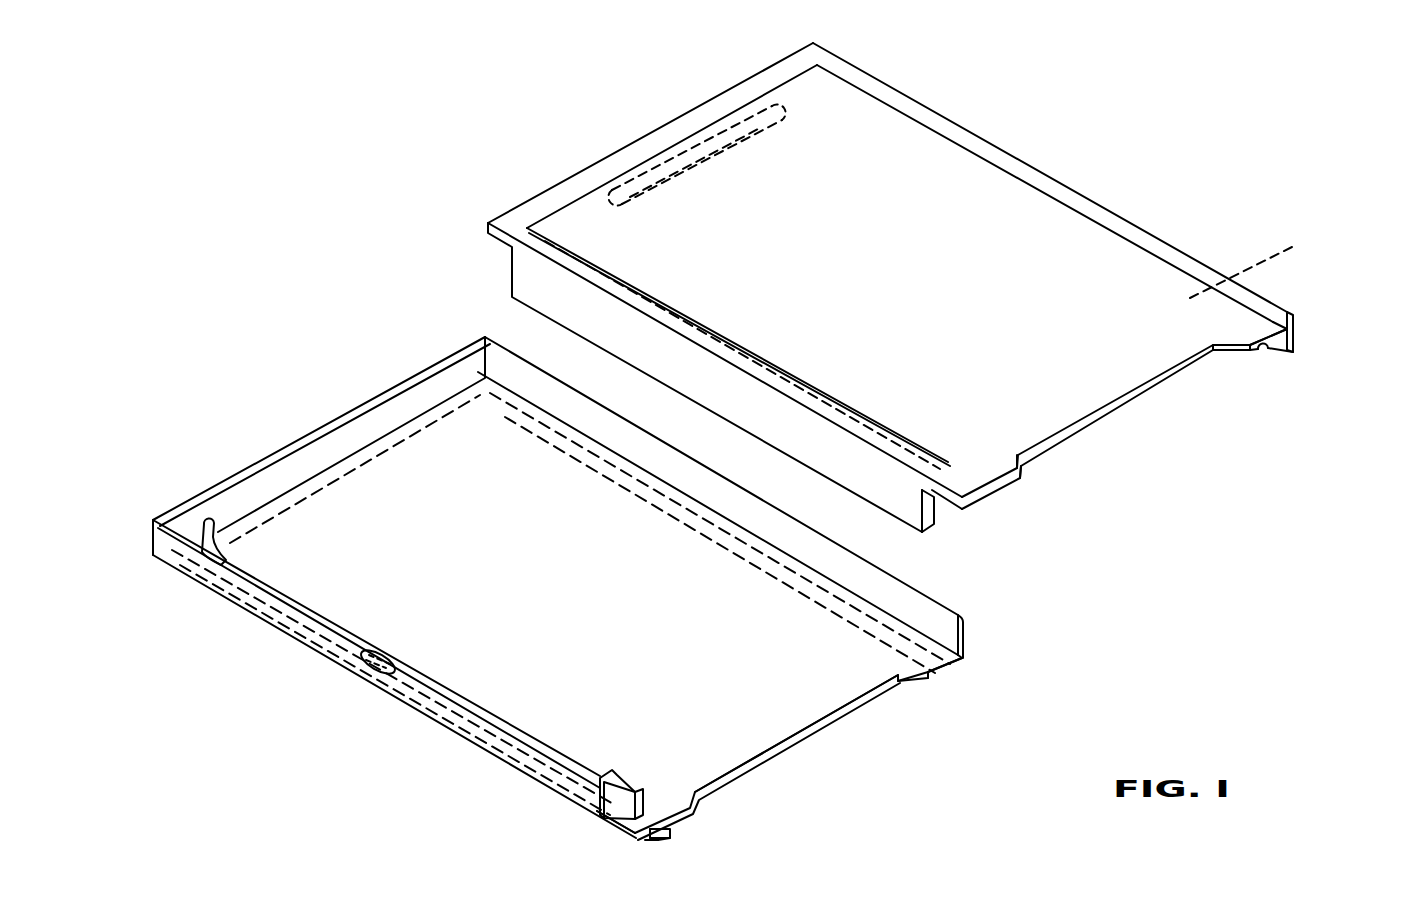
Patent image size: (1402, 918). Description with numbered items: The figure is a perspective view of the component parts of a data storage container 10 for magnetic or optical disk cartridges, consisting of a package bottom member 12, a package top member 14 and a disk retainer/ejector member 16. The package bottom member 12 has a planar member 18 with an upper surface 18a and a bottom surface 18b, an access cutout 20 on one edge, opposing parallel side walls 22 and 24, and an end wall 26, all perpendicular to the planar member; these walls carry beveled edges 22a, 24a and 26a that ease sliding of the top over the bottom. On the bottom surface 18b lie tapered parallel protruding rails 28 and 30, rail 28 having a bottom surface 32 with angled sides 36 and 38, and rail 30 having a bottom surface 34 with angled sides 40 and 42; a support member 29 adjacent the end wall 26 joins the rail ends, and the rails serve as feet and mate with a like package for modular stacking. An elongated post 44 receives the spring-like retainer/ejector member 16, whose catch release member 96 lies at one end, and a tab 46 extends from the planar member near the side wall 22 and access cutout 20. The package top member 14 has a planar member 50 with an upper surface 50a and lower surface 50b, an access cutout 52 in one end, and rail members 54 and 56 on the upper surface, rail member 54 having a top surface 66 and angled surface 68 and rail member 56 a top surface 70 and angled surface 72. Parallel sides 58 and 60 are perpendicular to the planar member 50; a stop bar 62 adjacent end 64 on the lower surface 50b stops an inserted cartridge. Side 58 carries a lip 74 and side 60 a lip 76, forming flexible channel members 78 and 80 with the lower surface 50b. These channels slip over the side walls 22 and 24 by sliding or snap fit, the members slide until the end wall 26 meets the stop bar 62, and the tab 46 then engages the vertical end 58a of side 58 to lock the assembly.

The data storage container 10 is at (1268, 142).
The package bottom member 12 is at (1045, 655).
The package top member 14 is at (1212, 396).
The disk retainer/ejector member 16 is at (240, 534).
The planar member 18 is at (626, 599).
The upper surface of planar member 18a is at (770, 659).
The bottom surface of planar member 18b is at (748, 747).
The access cutout 20 is at (812, 736).
The side wall 22 is at (173, 552).
The beveled edge 22a is at (560, 747).
The side wall 24 is at (645, 458).
The beveled edge 24a is at (735, 508).
The end wall 26 is at (360, 425).
The beveled edge 26a is at (242, 465).
The tapered parallel protruding rail 28 is at (665, 838).
The support member 29 is at (393, 463).
The tapered parallel protruding rail 30 is at (960, 670).
The bottom surface 32 is at (660, 844).
The bottom surface 34 is at (965, 668).
The angled side 36 is at (652, 842).
The angled side 38 is at (673, 830).
The angled side 40 is at (952, 672).
The angled side 42 is at (965, 660).
The elongated post 44 is at (392, 660).
The tab 46 is at (605, 815).
The planar member 50 is at (940, 284).
The upper surface of planar member 50a is at (1072, 304).
The lower surface of planar member 50b is at (1125, 385).
The access cutout 52 is at (1075, 440).
The rail member 54 is at (693, 325).
The rail member 56 is at (997, 152).
The side 58 is at (672, 359).
The vertical end 58a is at (920, 505).
The side 60 is at (1297, 332).
The stop bar 62 is at (682, 168).
The end 64 is at (625, 158).
The top surface 66 is at (833, 398).
The angled surface 68 is at (982, 488).
The top surface 70 is at (1178, 258).
The angled surface 72 is at (1280, 326).
The lip 74 is at (936, 527).
The lip 76 is at (1265, 352).
The flexible channel member 78 is at (935, 505).
The flexible channel member 80 is at (1261, 265).
The catch release member 96 is at (645, 793).